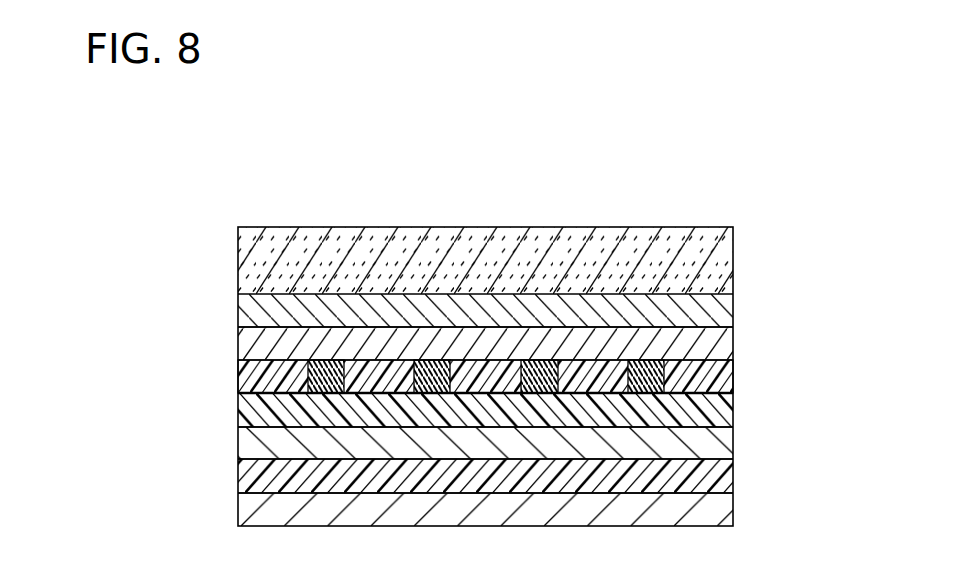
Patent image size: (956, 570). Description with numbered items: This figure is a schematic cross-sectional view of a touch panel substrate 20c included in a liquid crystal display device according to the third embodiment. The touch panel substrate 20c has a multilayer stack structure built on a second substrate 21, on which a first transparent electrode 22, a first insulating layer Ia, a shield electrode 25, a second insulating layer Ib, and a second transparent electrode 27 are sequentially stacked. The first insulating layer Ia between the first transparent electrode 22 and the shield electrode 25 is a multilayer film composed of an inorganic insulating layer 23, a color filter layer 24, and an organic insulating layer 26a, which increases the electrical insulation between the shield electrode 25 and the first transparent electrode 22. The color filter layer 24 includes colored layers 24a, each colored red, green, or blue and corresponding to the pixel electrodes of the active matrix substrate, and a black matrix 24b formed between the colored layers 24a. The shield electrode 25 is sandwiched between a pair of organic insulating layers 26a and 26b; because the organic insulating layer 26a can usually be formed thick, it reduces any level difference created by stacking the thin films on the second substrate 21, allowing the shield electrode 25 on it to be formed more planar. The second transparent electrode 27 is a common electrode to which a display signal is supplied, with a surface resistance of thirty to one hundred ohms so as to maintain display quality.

The touch panel substrate 20c is at (318, 181).
The second substrate 21 is at (723, 253).
The first transparent electrode 22 is at (725, 307).
The inorganic insulating layer 23 is at (725, 338).
The color filter layer 24 is at (824, 355).
The colored layers 24a is at (733, 368).
The black matrix 24b is at (655, 386).
The shield electrode 25 is at (727, 447).
The organic insulating layer 26a is at (725, 416).
The organic insulating layer 26b is at (725, 473).
The second transparent electrode 27 is at (725, 503).
The first insulating layer Ia is at (237, 327).
The second insulating layer Ib is at (237, 462).